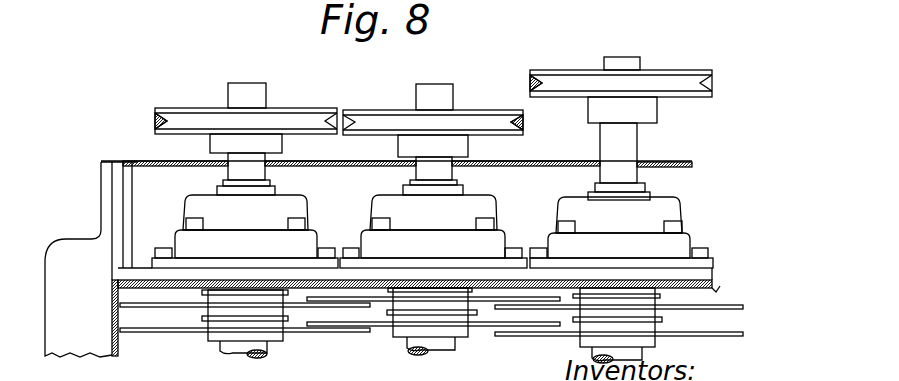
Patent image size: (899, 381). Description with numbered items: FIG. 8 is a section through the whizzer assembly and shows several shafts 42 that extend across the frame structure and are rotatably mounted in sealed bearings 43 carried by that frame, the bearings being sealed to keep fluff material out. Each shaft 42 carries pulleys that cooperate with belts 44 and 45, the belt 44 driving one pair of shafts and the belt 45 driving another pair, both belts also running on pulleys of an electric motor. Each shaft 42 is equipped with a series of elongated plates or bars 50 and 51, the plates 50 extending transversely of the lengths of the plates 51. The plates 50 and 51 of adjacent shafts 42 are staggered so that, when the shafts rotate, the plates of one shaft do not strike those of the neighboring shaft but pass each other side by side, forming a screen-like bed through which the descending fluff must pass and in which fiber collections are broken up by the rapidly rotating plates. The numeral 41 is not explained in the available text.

The table plate 41 is at (712, 293).
The shaft 42 is at (270, 352).
The bearing 43 is at (193, 203).
The belt 44 is at (155, 117).
The belt 45 is at (530, 80).
The plate 50 is at (207, 297).
The plate 51 is at (147, 308).